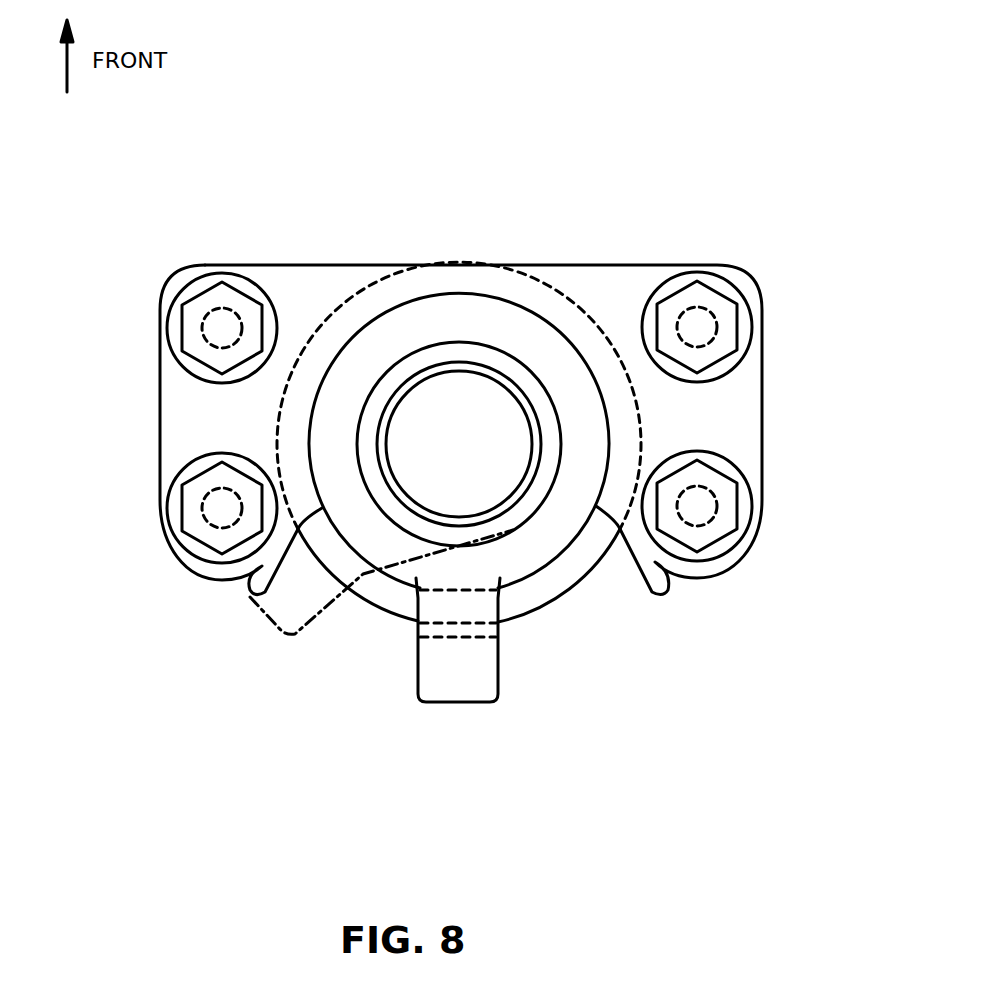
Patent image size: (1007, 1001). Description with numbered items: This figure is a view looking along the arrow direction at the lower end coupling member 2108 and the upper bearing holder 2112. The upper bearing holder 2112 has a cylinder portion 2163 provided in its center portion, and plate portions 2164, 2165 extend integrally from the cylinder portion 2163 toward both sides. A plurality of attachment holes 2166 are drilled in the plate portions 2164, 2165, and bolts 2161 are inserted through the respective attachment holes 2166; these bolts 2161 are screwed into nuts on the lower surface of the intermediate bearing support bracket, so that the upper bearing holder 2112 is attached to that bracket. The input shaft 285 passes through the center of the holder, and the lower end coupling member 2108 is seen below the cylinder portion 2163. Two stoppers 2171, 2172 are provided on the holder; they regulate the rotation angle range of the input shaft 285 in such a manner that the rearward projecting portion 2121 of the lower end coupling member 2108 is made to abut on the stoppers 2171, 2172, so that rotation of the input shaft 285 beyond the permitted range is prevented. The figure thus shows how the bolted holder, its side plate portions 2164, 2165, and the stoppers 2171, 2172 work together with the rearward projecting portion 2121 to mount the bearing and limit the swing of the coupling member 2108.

The upper bearing holder 2112 is at (362, 252).
The input shaft 285 is at (481, 352).
The cylinder portion 2163 is at (557, 293).
The lower end coupling member 2108 is at (543, 503).
The bolts 2161 is at (203, 296).
The attachment holes 2166 is at (201, 335).
The plate portion 2164 is at (183, 422).
The plate portion 2165 is at (722, 425).
The stopper 2171 is at (250, 590).
The stopper 2172 is at (652, 558).
The rearward projecting portion 2121 is at (273, 635).